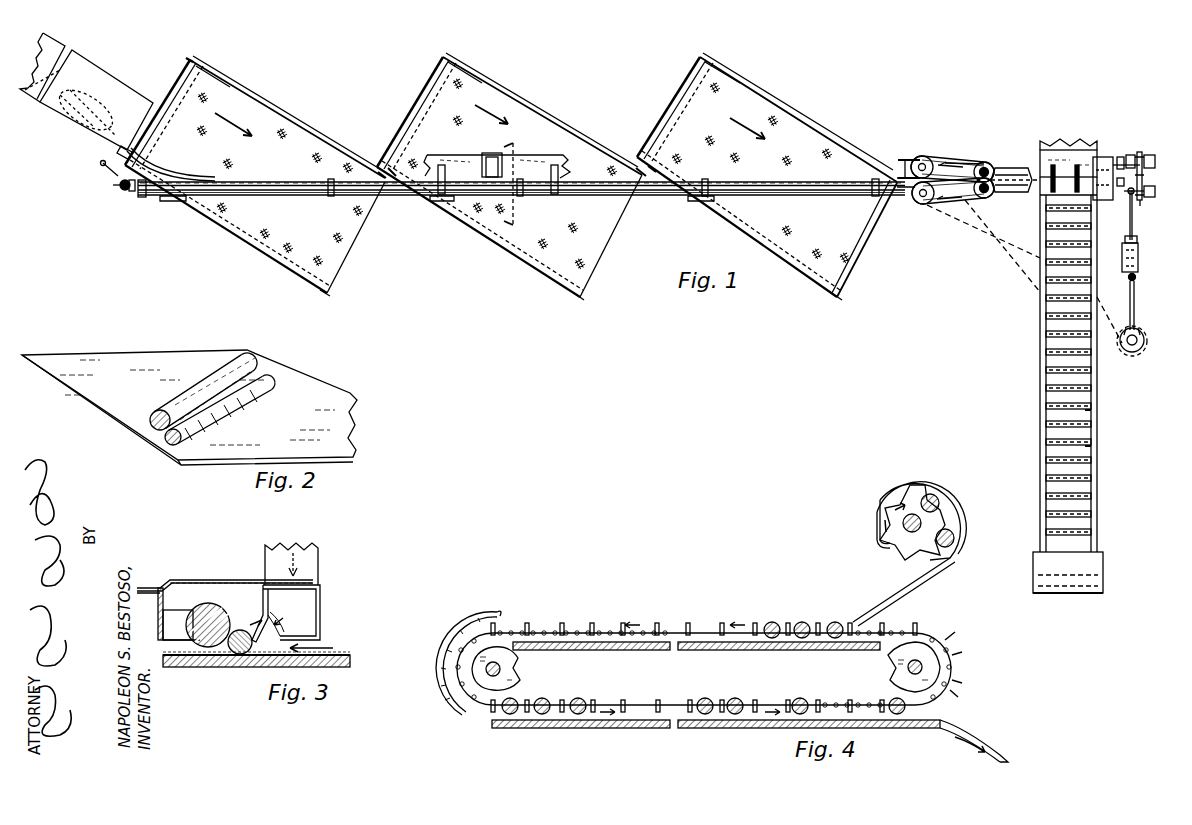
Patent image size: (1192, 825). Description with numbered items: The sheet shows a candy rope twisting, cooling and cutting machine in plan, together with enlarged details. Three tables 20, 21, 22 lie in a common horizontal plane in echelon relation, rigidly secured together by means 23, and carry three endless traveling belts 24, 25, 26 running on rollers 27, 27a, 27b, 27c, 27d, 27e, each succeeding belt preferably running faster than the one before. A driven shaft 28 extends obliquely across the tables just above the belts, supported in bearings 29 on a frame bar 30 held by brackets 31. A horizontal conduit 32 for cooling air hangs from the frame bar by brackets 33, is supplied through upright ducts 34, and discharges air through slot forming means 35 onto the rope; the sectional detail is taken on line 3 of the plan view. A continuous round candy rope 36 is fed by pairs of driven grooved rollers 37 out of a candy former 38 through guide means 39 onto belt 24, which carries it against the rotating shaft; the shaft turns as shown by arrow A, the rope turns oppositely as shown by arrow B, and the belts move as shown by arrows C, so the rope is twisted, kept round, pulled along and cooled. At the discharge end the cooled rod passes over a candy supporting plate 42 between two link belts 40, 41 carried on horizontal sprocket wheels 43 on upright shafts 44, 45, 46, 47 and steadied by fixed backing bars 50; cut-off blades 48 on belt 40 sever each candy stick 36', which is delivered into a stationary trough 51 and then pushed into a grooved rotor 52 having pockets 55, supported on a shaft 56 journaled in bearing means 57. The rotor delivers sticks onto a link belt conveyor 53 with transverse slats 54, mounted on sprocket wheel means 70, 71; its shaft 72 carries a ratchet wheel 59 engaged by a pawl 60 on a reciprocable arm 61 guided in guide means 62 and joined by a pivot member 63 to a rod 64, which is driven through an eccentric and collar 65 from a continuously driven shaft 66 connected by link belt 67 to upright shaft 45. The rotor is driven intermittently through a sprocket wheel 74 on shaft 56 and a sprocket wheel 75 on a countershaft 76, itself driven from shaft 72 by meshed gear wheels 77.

In FIG. 1, the table 20 is at (255, 176).
In FIG. 1, the table 21 is at (560, 128).
In FIG. 3, the table 21 is at (190, 668).
In FIG. 1, the table 22 is at (822, 132).
In FIG. 1, the securing means 23 is at (376, 172).
In FIG. 1, the endless traveling belt 24 is at (275, 112).
In FIG. 2, the endless traveling belt 24 is at (333, 402).
In FIG. 1, the endless traveling belt 25 is at (535, 112).
In FIG. 3, the endless traveling belt 25 is at (347, 652).
In FIG. 1, the endless traveling belt 26 is at (791, 112).
In FIG. 1, the roller 27 is at (190, 58).
In FIG. 1, the roller 27a is at (355, 255).
In FIG. 1, the roller 27b is at (428, 105).
In FIG. 1, the roller 27c is at (615, 246).
In FIG. 1, the roller 27d is at (668, 100).
In FIG. 1, the roller 27e is at (862, 265).
In FIG. 1, the driven shaft 28 is at (280, 181).
In FIG. 2, the driven shaft 28 is at (190, 398).
In FIG. 3, the driven shaft 28 is at (200, 603).
In FIG. 1, the bearings 29 is at (141, 198).
In FIG. 3, the bearings 29 is at (176, 608).
In FIG. 1, the frame bar 30 is at (258, 197).
In FIG. 3, the frame bar 30 is at (158, 628).
In FIG. 1, the brackets 31 is at (167, 203).
In FIG. 1, the horizontal conduit 32 is at (551, 156).
In FIG. 3, the horizontal conduit 32 is at (320, 611).
In FIG. 1, the brackets 33 is at (441, 165).
In FIG. 3, the brackets 33 is at (222, 600).
In FIG. 1, the upright ducts 34 is at (492, 155).
In FIG. 3, the upright ducts 34 is at (318, 553).
In FIG. 3, the slot forming means 35 is at (255, 655).
In FIG. 1, the candy rope 36 is at (487, 163).
In FIG. 2, the candy rope 36 is at (238, 400).
In FIG. 3, the candy rope 36 is at (243, 619).
In FIG. 1, the candy stick 36' is at (1043, 189).
In FIG. 4, the candy stick 36' is at (747, 619).
In FIG. 1, the driven grooved rollers 37 is at (78, 96).
In FIG. 1, the candy former 38 is at (115, 85).
In FIG. 1, the guide means 39 is at (127, 146).
In FIG. 1, the link belt 40 is at (950, 162).
In FIG. 1, the link belt 41 is at (965, 202).
In FIG. 1, the candy supporting plate 42 is at (898, 178).
In FIG. 1, the sprocket wheels 43 is at (922, 156).
In FIG. 1, the upright shaft 44 is at (914, 160).
In FIG. 1, the upright shaft 45 is at (920, 202).
In FIG. 1, the upright shaft 46 is at (984, 166).
In FIG. 1, the upright shaft 47 is at (986, 197).
In FIG. 1, the candy cut-off blades 48 is at (906, 166).
In FIG. 1, the guide or backing bars 50 is at (968, 160).
In FIG. 1, the stationary trough 51 is at (1014, 170).
In FIG. 1, the grooved rotor 52 is at (1052, 192).
In FIG. 4, the grooved rotor 52 is at (925, 478).
In FIG. 1, the link belt conveyor 53 is at (1097, 395).
In FIG. 4, the link belt conveyor 53 is at (580, 628).
In FIG. 1, the transverse slats 54 is at (1097, 448).
In FIG. 4, the transverse slats 54 is at (738, 628).
In FIG. 4, the pockets 55 is at (855, 530).
In FIG. 1, the shaft 56 is at (1102, 165).
In FIG. 4, the shaft 56 is at (880, 535).
In FIG. 1, the bearing means 57 is at (1115, 152).
In FIG. 1, the ratchet wheel 59 is at (1140, 200).
In FIG. 1, the pawl 60 is at (1128, 228).
In FIG. 1, the reciprocable arm 61 is at (1140, 240).
In FIG. 1, the guide means 62 is at (1139, 262).
In FIG. 1, the pivot member 63 is at (1140, 276).
In FIG. 1, the rod 64 is at (1137, 291).
In FIG. 1, the collar 65 is at (1138, 330).
In FIG. 1, the continuously driven shaft 66 is at (1146, 345).
In FIG. 1, the link belt 67 is at (970, 245).
In FIG. 4, the sprocket wheel means 70 is at (885, 657).
In FIG. 4, the sprocket wheel means 71 is at (520, 677).
In FIG. 1, the shaft 72 is at (1155, 192).
In FIG. 4, the shaft 72 is at (925, 668).
In FIG. 1, the sprocket wheel 74 is at (1137, 200).
In FIG. 1, the sprocket wheel 75 is at (1121, 157).
In FIG. 1, the countershaft 76 is at (1152, 162).
In FIG. 1, the meshed gear wheels 77 is at (1150, 191).
In FIG. 1, the section line 3 is at (516, 186).
In FIG. 2, the shaft rotation arrow A is at (162, 395).
In FIG. 3, the shaft rotation arrow A is at (240, 600).
In FIG. 2, the candy rope rotation arrow B is at (222, 388).
In FIG. 3, the candy rope rotation arrow B is at (252, 625).
In FIG. 1, the belt travel arrow C is at (490, 117).
In FIG. 2, the belt travel arrow C is at (300, 398).